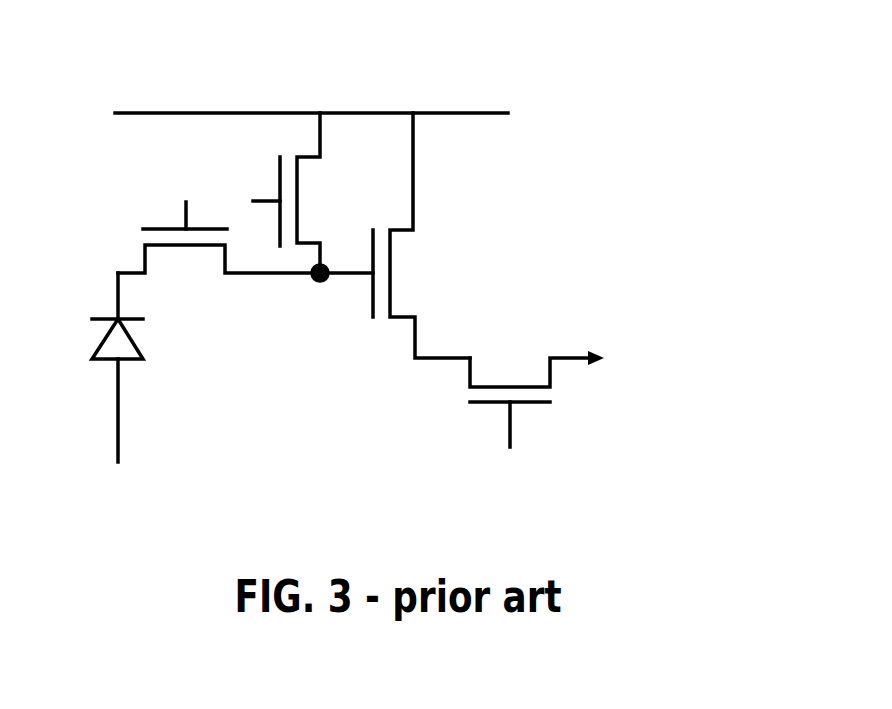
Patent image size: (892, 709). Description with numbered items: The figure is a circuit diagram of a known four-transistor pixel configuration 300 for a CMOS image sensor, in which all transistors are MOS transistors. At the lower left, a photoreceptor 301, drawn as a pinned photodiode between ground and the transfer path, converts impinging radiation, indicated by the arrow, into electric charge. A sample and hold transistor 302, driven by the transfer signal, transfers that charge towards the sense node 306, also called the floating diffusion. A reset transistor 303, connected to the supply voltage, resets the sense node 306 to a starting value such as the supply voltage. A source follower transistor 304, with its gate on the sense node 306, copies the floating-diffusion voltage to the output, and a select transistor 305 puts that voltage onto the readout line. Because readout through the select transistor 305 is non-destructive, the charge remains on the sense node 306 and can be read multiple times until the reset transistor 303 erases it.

The pixel configuration 300 is at (628, 132).
The photoreceptor 301 is at (120, 350).
The sample and hold transistor 302 is at (216, 230).
The reset transistor 303 is at (277, 193).
The source follower transistor 304 is at (395, 235).
The select transistor 305 is at (537, 400).
The sense node 306 is at (320, 282).